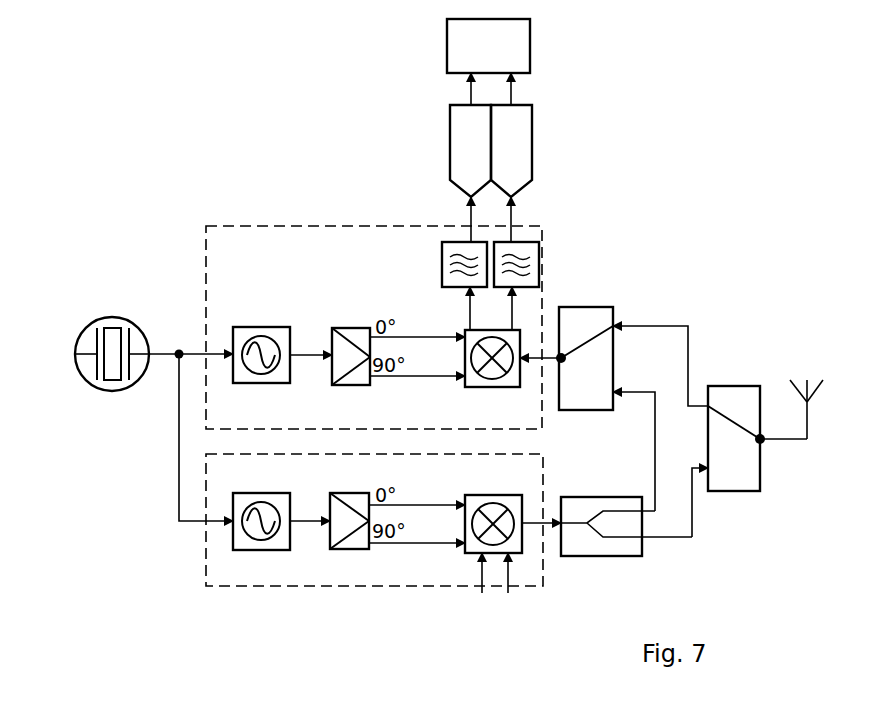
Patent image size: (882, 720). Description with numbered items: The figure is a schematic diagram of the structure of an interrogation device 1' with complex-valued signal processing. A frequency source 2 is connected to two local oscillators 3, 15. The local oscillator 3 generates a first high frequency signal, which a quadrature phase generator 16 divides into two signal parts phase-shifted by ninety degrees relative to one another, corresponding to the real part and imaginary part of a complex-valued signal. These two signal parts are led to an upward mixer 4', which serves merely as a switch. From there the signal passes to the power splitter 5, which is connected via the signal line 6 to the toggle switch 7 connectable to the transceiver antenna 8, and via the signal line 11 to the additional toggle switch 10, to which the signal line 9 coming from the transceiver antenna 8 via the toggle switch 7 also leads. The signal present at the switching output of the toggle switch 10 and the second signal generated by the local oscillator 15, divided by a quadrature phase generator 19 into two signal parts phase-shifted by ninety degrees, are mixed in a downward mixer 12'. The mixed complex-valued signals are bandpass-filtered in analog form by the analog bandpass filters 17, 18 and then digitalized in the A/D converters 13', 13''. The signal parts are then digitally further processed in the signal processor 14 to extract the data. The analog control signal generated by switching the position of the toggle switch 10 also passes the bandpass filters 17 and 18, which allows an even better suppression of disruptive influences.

The interrogation device 1' is at (374, 327).
The frequency source 2 is at (92, 319).
The local oscillator 3 is at (233, 546).
The upward mixer 4' is at (455, 583).
The power splitter 5 is at (591, 550).
The signal line 6 is at (675, 536).
The toggle switch 7 is at (750, 493).
The transceiver antenna 8 is at (810, 398).
The signal line 9 is at (660, 323).
The toggle switch 10 is at (597, 304).
The signal line 11 is at (653, 442).
The downward mixer 12' is at (435, 278).
The A/D converter 13' is at (562, 119).
The A/D converter 13'' is at (421, 114).
The signal processor 14 is at (488, 46).
The local oscillator 15 is at (233, 338).
The quadrature phase generator 16 is at (352, 550).
The analog bandpass filter 17 is at (530, 250).
The analog bandpass filter 18 is at (460, 253).
The quadrature phase generator 19 is at (350, 331).